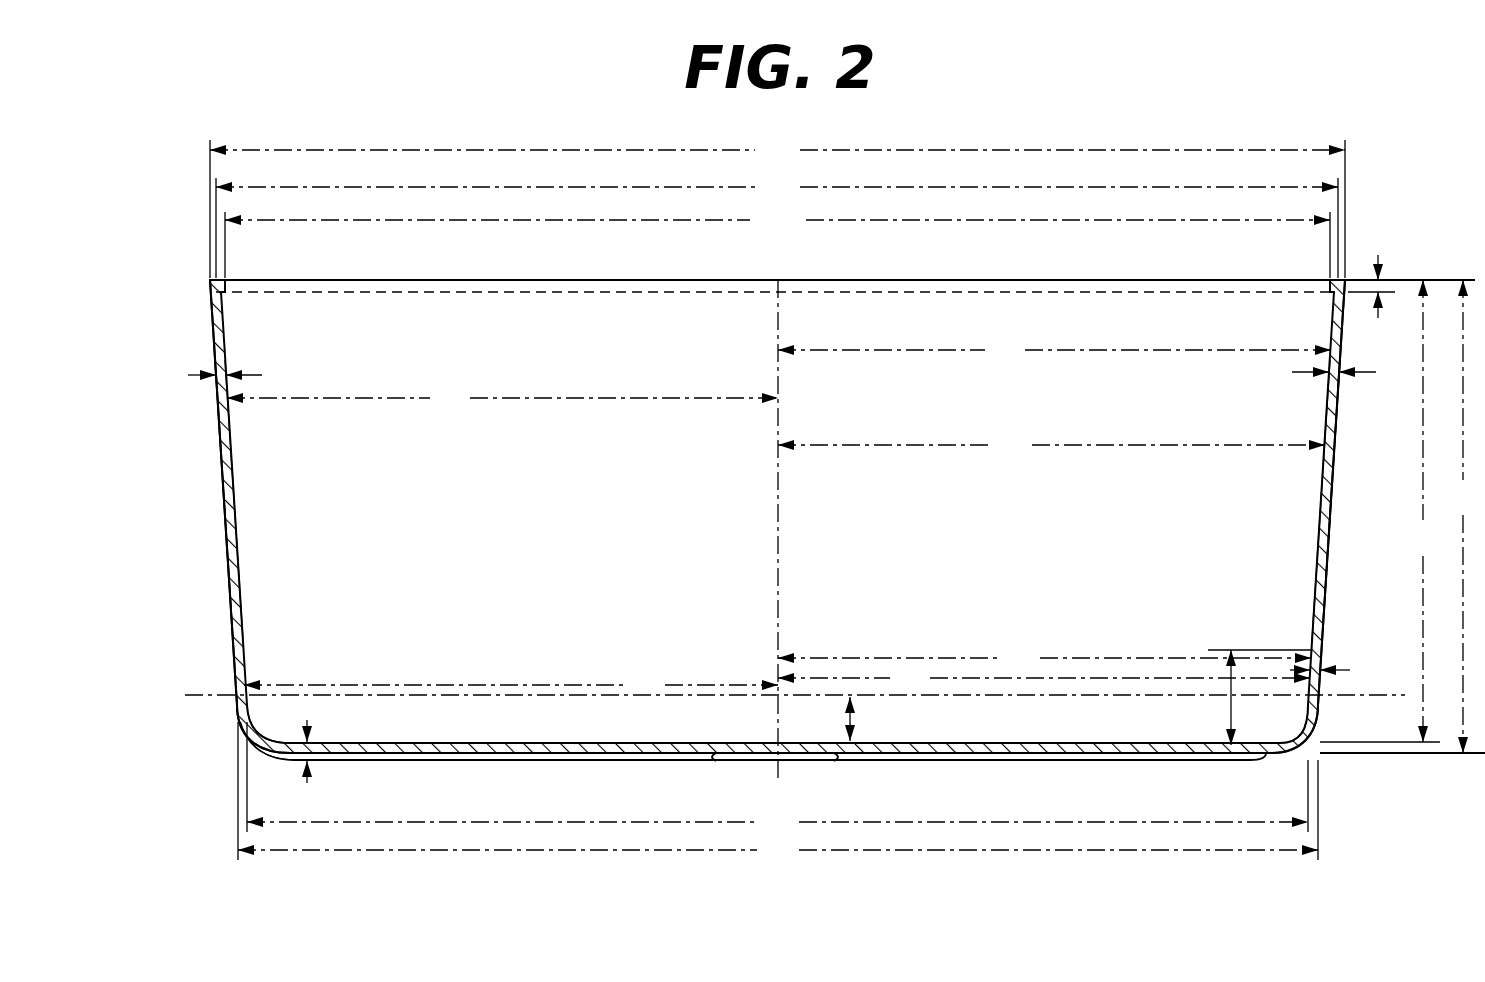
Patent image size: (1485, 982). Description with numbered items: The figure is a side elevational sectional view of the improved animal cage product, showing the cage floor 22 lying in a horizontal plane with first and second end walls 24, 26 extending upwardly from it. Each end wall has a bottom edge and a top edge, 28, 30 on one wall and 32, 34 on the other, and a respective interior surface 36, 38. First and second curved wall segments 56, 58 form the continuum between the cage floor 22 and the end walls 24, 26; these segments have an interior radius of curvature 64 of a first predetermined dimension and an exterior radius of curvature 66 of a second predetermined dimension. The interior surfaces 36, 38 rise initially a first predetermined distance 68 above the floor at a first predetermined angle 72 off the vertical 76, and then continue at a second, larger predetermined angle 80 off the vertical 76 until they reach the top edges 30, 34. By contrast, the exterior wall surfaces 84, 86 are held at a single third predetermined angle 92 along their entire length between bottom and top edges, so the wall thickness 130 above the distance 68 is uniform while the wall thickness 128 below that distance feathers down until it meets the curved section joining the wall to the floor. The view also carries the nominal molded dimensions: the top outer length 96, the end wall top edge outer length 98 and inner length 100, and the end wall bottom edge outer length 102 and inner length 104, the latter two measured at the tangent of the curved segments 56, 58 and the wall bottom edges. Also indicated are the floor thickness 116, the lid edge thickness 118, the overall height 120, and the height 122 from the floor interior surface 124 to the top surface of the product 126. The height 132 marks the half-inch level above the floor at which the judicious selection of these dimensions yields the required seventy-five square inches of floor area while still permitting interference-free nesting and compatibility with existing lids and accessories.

The cage floor 22 is at (1108, 743).
The first end wall 24 is at (1332, 507).
The second end wall 26 is at (224, 510).
The bottom edge 28 is at (1323, 712).
The top edge 30 is at (1332, 294).
The bottom edge 32 is at (236, 707).
The top edge 34 is at (214, 295).
The interior surface 36 is at (1317, 462).
The interior surface 38 is at (232, 438).
The first curved wall segment 56 is at (1280, 740).
The second curved wall segment 58 is at (271, 757).
The interior radius of curvature 64 is at (241, 729).
The exterior radius of curvature 66 is at (236, 721).
The first predetermined distance 68 is at (1234, 706).
The first predetermined angle 72 is at (1044, 658).
The vertical 76 is at (781, 629).
The second predetermined angle 80 is at (1051, 445).
The exterior wall surface 84 is at (1321, 576).
The exterior wall surface 86 is at (232, 548).
The third predetermined angle 92 is at (779, 517).
The top outer length 96 is at (777, 206).
The end wall top edge outer length 98 is at (777, 225).
The end wall top edge inner length 100 is at (777, 241).
The end wall bottom edge outer length 102 is at (778, 793).
The end wall bottom edge inner length 104 is at (777, 779).
The floor thickness 116 is at (310, 746).
The lid edge thickness 118 is at (1383, 258).
The overall height 120 is at (1402, 516).
The height above floor interior surface 122 is at (1382, 511).
The floor interior surface 124 is at (550, 742).
The top surface of the product 126 is at (1158, 280).
The wall thickness below predetermined distance 128 is at (1350, 670).
The wall thickness above predetermined distance 130 is at (258, 375).
The 0.5 inch height 132 is at (852, 718).